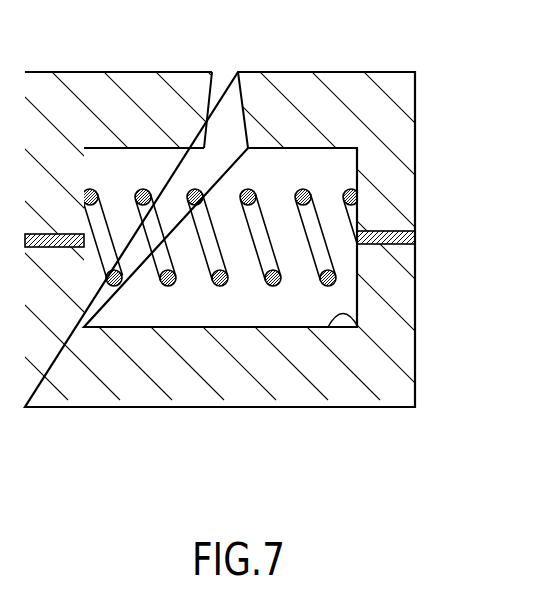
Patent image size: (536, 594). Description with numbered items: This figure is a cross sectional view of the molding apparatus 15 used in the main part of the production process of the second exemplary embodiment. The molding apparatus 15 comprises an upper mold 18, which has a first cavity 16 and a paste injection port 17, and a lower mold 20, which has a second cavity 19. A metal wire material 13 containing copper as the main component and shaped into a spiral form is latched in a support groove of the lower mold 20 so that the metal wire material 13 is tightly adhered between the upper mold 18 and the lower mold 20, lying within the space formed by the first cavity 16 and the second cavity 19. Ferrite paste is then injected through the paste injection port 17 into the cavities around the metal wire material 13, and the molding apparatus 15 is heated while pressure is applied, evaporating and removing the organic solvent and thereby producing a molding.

The metal wire material 13 is at (192, 189).
The molding apparatus 15 is at (351, 62).
The first cavity 16 is at (323, 148).
The paste injection port 17 is at (228, 82).
The upper mold 18 is at (393, 108).
The second cavity 19 is at (358, 327).
The lower mold 20 is at (400, 327).